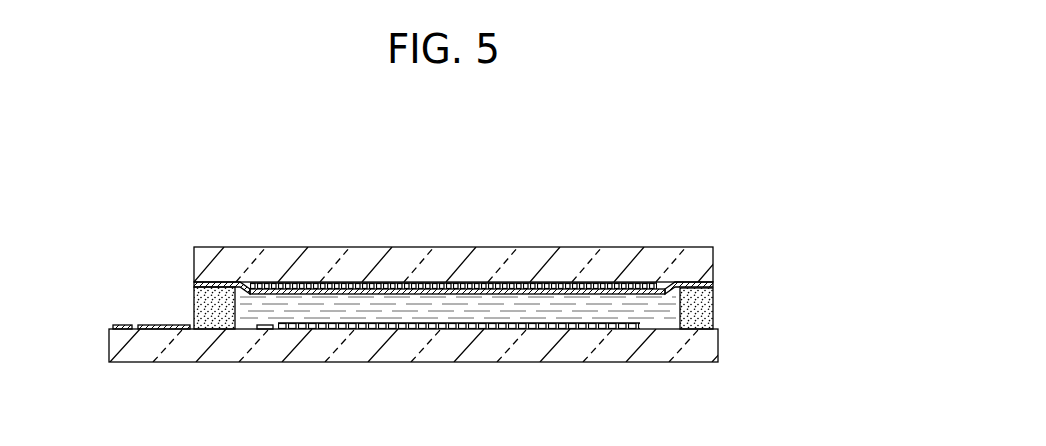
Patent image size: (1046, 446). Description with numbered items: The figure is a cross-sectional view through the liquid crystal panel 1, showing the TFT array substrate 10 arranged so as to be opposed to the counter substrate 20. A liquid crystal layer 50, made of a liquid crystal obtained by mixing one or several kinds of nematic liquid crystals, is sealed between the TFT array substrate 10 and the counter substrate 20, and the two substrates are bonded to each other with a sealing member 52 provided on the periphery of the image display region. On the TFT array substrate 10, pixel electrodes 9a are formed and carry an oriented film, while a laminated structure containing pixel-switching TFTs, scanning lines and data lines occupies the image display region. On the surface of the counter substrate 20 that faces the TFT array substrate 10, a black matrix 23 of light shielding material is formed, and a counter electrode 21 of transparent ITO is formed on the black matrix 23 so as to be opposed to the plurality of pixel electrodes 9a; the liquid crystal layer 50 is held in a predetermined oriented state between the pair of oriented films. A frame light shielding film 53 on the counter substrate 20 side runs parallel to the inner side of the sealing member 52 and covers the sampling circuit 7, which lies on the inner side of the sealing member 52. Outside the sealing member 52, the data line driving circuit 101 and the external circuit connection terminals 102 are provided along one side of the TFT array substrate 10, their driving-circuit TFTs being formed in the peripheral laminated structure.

The liquid crystal panel 1 is at (222, 167).
The sampling circuit 7 is at (263, 330).
The pixel electrodes 9a is at (320, 328).
The TFT array substrate 10 is at (712, 343).
The counter substrate 20 is at (707, 262).
The counter electrode 21 is at (510, 285).
The black matrix 23 is at (413, 283).
The liquid crystal layer 50 is at (657, 320).
The sealing member 52 is at (192, 298).
The frame light shielding film 53 is at (270, 283).
The data line driving circuit 101 is at (173, 323).
The external circuit connection terminals 102 is at (127, 325).